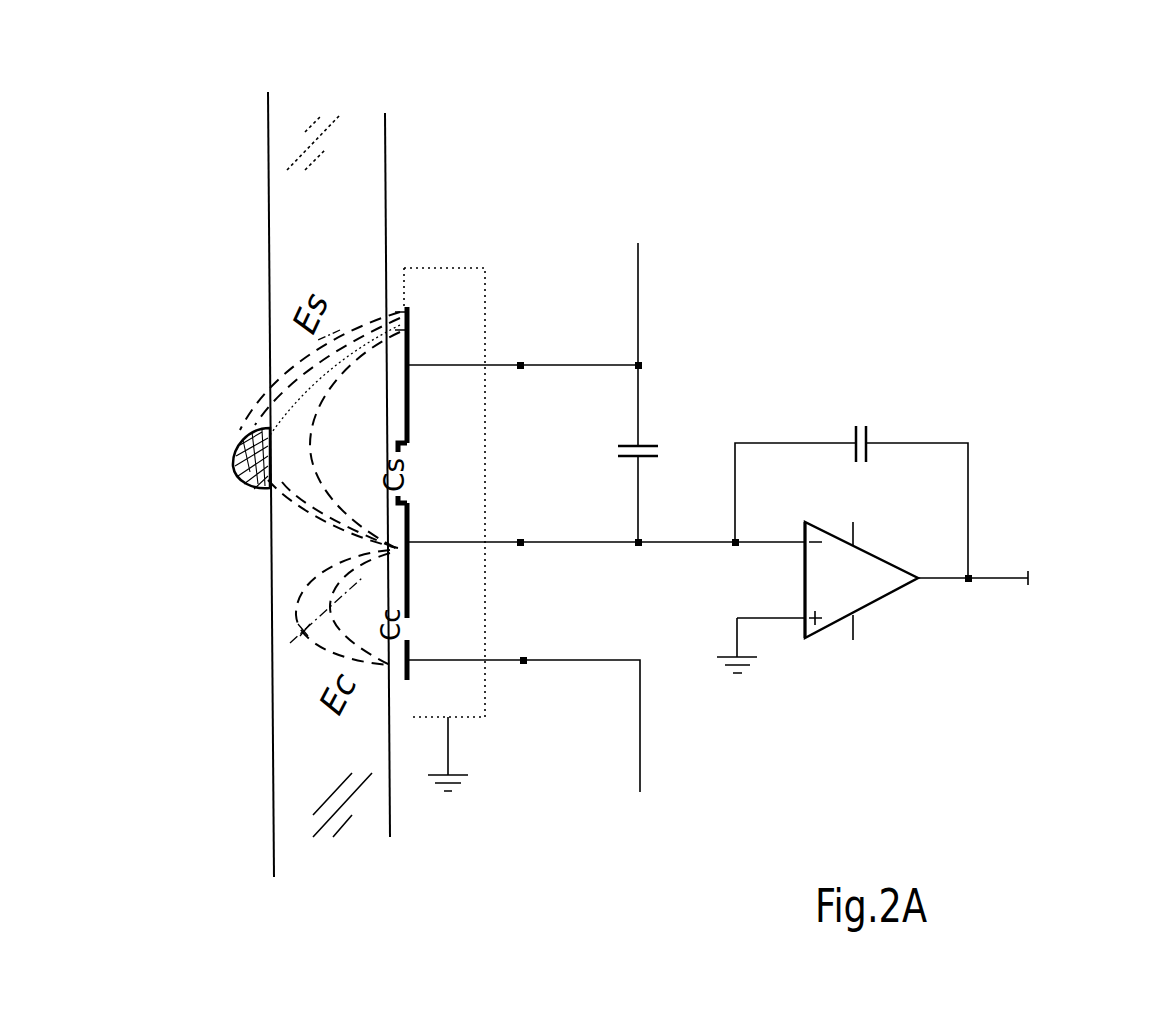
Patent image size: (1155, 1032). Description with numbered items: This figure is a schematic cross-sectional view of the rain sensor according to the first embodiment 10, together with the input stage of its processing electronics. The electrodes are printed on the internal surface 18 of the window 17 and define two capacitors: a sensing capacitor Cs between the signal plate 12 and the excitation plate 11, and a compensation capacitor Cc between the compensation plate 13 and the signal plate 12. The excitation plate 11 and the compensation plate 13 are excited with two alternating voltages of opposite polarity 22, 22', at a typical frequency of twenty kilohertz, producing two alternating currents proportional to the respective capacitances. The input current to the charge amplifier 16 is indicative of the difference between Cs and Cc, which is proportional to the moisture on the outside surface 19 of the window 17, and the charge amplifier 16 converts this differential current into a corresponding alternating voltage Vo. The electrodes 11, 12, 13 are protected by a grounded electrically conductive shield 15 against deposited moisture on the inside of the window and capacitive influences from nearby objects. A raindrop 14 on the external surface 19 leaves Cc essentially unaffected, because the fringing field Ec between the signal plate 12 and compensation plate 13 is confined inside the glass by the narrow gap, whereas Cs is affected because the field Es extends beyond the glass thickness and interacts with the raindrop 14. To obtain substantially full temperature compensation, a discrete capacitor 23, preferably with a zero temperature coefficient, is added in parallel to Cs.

The first embodiment 10 is at (1096, 170).
The excitation plate 11 is at (409, 362).
The signal plate 12 is at (410, 512).
The compensation plate 13 is at (409, 656).
The raindrop 14 is at (230, 470).
The grounded electrically conductive shield 15 is at (466, 262).
The charge amplifier 16 is at (885, 551).
The window 17 is at (329, 439).
The internal surface 18 is at (389, 168).
The outside surface 19 is at (262, 166).
The alternating voltage 22 is at (653, 337).
The alternating voltage of opposite polarity 22' is at (640, 856).
The discrete capacitor 23 is at (618, 445).